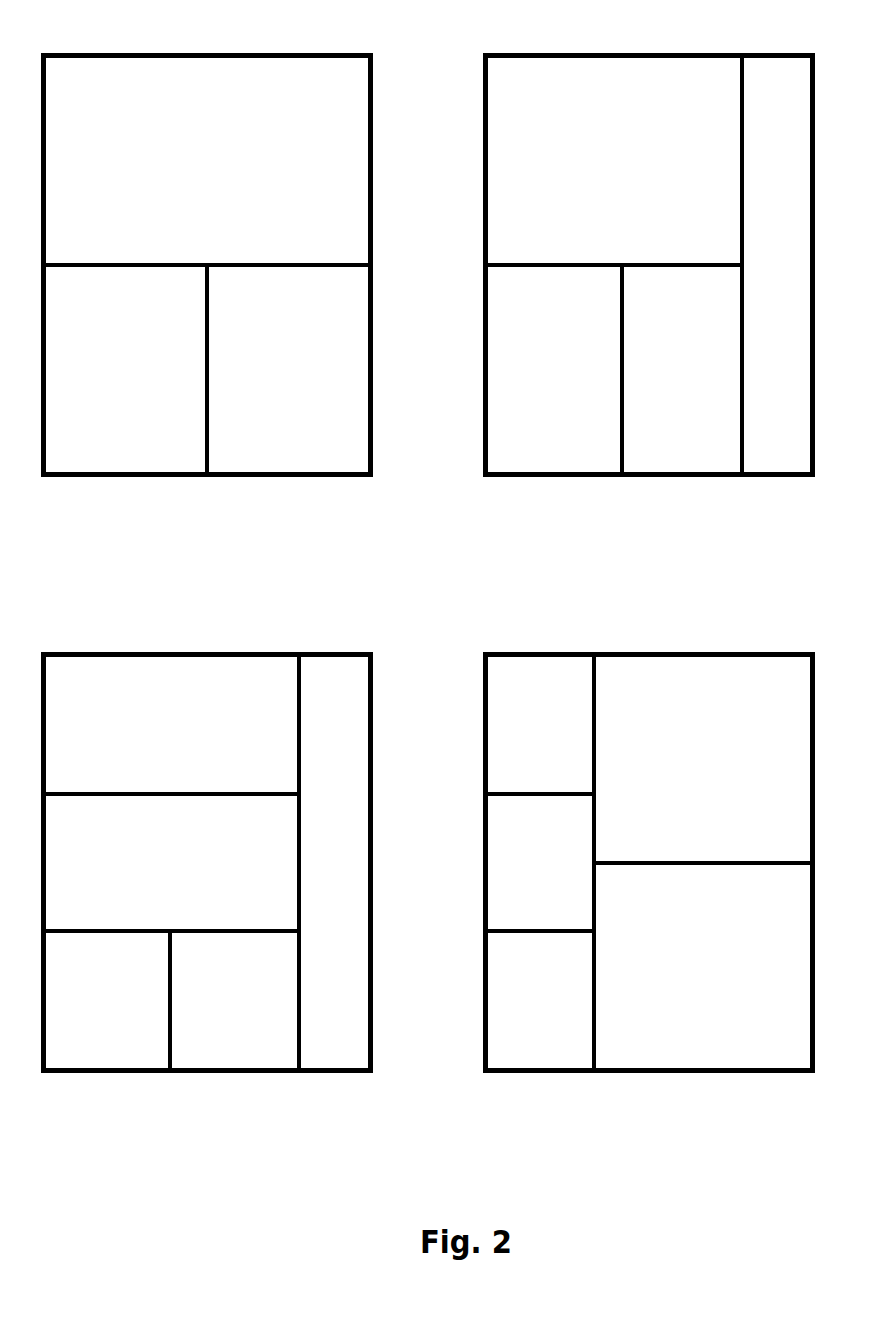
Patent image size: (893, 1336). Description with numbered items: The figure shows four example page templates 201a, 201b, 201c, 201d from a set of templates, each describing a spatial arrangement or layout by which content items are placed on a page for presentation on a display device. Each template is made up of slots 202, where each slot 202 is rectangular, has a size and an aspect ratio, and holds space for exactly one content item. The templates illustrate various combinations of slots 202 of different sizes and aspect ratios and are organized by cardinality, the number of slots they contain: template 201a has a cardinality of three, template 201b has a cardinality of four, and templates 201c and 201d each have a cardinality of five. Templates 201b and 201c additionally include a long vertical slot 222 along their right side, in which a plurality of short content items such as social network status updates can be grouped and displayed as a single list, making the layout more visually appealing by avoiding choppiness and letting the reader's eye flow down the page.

The page template 201a is at (210, 53).
The page template 201b is at (650, 53).
The page template 201c is at (209, 652).
The page template 201d is at (650, 652).
The slot 202 is at (186, 186).
The long vertical slot 222 is at (757, 279).